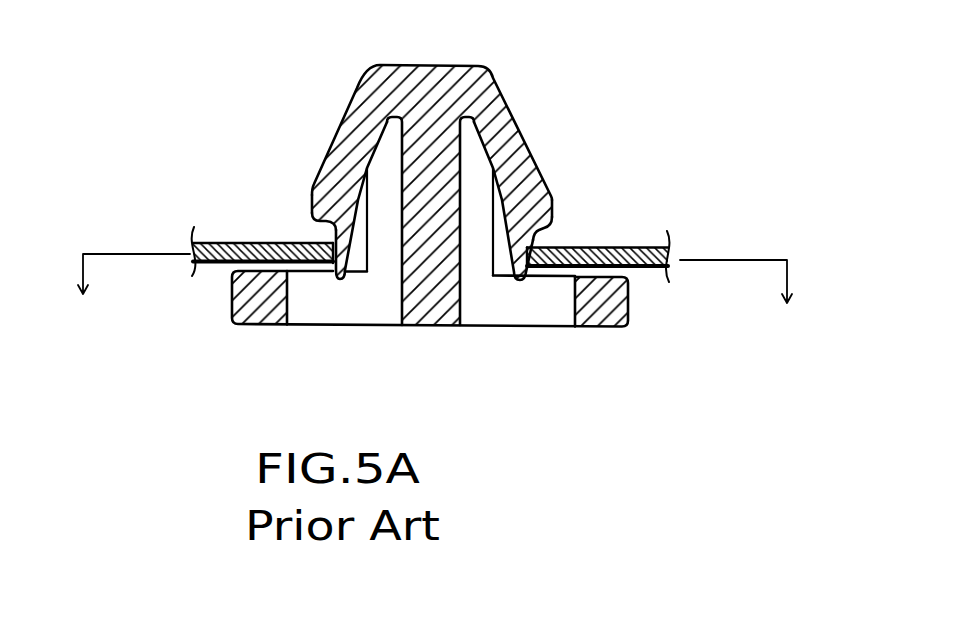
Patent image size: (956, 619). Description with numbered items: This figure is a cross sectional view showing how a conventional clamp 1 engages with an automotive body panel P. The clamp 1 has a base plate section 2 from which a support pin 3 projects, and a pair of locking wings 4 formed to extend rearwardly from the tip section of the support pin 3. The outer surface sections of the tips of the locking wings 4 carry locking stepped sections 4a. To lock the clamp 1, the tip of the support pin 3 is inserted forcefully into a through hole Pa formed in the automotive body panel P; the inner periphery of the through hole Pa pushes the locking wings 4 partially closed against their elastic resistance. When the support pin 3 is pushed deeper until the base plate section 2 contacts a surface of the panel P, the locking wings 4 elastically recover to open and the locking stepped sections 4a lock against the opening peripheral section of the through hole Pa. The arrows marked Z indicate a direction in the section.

The clamp 1 is at (510, 78).
The base plate section 2 is at (603, 326).
The support pin 3 is at (433, 170).
The locking wings 4 is at (337, 180).
The locking stepped sections 4a is at (322, 227).
The automotive body panel P is at (645, 267).
The through hole Pa is at (508, 257).
The Z direction Z is at (434, 296).